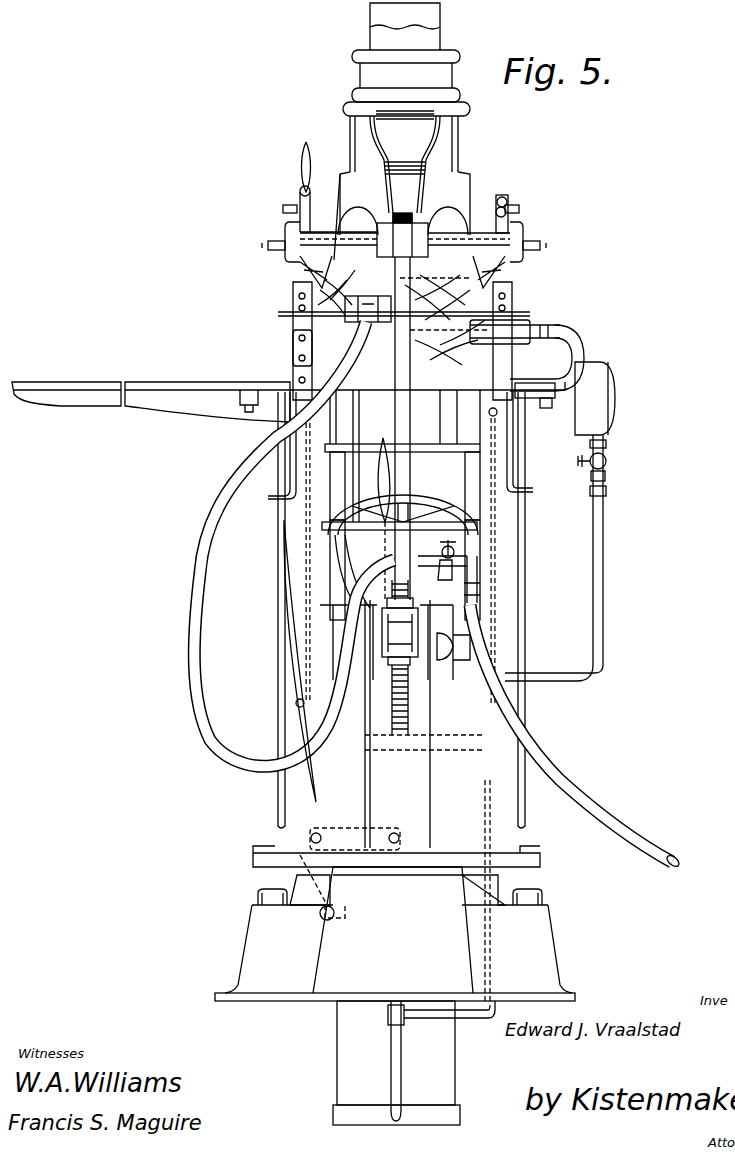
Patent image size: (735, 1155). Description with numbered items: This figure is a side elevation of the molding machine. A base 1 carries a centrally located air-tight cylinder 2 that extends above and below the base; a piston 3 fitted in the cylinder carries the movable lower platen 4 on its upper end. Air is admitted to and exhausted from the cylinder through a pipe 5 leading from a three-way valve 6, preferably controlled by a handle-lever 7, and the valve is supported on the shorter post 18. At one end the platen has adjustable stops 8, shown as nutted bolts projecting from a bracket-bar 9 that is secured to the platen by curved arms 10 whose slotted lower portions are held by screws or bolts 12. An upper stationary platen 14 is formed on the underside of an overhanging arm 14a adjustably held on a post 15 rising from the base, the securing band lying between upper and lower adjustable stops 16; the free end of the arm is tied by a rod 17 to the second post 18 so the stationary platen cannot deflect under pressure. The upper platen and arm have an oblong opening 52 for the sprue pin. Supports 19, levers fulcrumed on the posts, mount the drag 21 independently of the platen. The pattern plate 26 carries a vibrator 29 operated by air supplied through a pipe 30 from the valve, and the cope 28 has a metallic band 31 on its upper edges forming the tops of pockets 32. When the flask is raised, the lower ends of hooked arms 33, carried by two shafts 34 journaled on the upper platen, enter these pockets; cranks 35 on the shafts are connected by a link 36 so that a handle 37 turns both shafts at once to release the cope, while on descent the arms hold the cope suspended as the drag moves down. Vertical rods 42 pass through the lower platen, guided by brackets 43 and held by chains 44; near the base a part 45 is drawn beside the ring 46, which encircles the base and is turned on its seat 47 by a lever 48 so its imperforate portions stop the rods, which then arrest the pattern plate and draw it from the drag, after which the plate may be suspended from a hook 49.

The base 1 is at (566, 993).
The air-tight cylinder 2 is at (446, 1065).
The piston 3 is at (358, 472).
The platen 4 is at (165, 388).
The pipe 5 is at (402, 1066).
The three-way valve 6 is at (408, 520).
The handle-lever 7 is at (385, 507).
The stops 8 is at (532, 330).
The bracket-bar 9 is at (518, 328).
The curved arms 10 is at (588, 340).
The screws or bolts 12 is at (543, 385).
The upper stationary platen 14 is at (418, 262).
The overhanging arm 14a is at (468, 178).
The post 15 is at (450, 44).
The adjustable stops 16 is at (440, 84).
The rod 17 is at (394, 420).
The second post 18 is at (445, 790).
The supports 19 is at (338, 576).
The drag 21 is at (293, 348).
The pattern plate 26 is at (278, 320).
The cope 28 is at (293, 298).
The vibrator 29 is at (415, 310).
The pipe 30 is at (196, 574).
The metallic band 31 is at (270, 252).
The pockets or cut-outs 32 is at (300, 268).
The hooked arms 33 is at (285, 236).
The shafts 34 is at (283, 210).
The cranks 35 is at (300, 205).
The link 36 is at (470, 215).
The handle 37 is at (299, 165).
The rods 42 is at (278, 680).
The brackets 43 is at (296, 468).
The chains 44 is at (300, 632).
The lug 45 is at (296, 886).
The ring 46 is at (270, 850).
The seat 47 is at (320, 970).
The lever 48 is at (300, 733).
The hook 49 is at (340, 238).
The oblong opening 52 is at (340, 290).